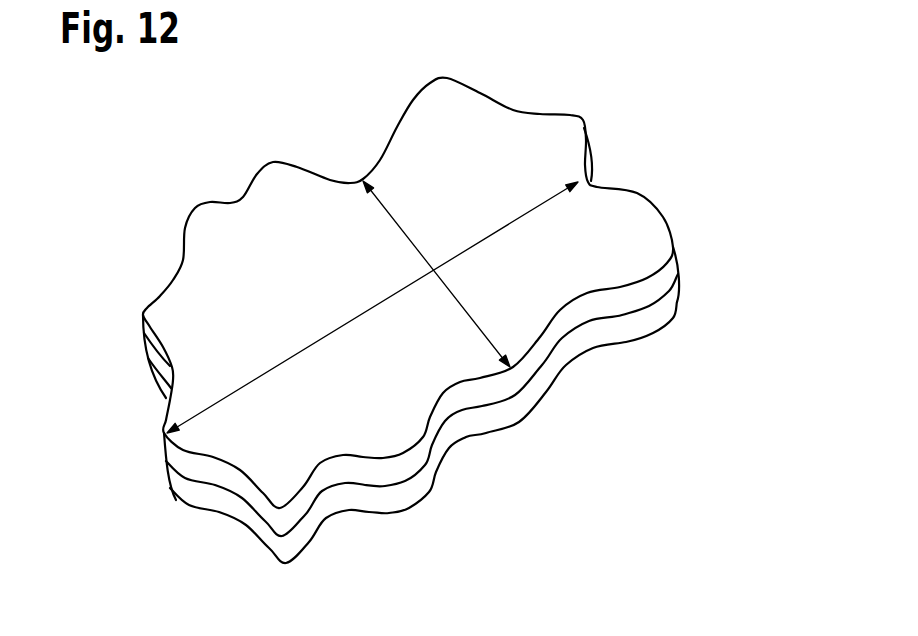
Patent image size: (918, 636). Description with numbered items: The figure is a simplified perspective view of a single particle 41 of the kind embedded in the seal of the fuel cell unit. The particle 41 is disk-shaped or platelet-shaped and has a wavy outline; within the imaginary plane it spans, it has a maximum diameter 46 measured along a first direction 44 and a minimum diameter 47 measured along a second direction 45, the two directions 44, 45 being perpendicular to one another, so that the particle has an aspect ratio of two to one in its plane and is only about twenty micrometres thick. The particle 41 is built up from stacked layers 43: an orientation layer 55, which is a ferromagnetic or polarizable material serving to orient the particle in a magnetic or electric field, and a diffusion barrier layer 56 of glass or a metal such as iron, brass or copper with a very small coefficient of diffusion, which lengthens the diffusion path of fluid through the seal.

The particle 41 is at (475, 321).
The layer 43 is at (475, 321).
The orientation layer 55 is at (668, 265).
The diffusion barrier layer 56 is at (650, 323).
The first direction 44 is at (372, 307).
The maximum diameter 46 is at (271, 368).
The second direction 45 is at (436, 266).
The minimum diameter 47 is at (406, 236).